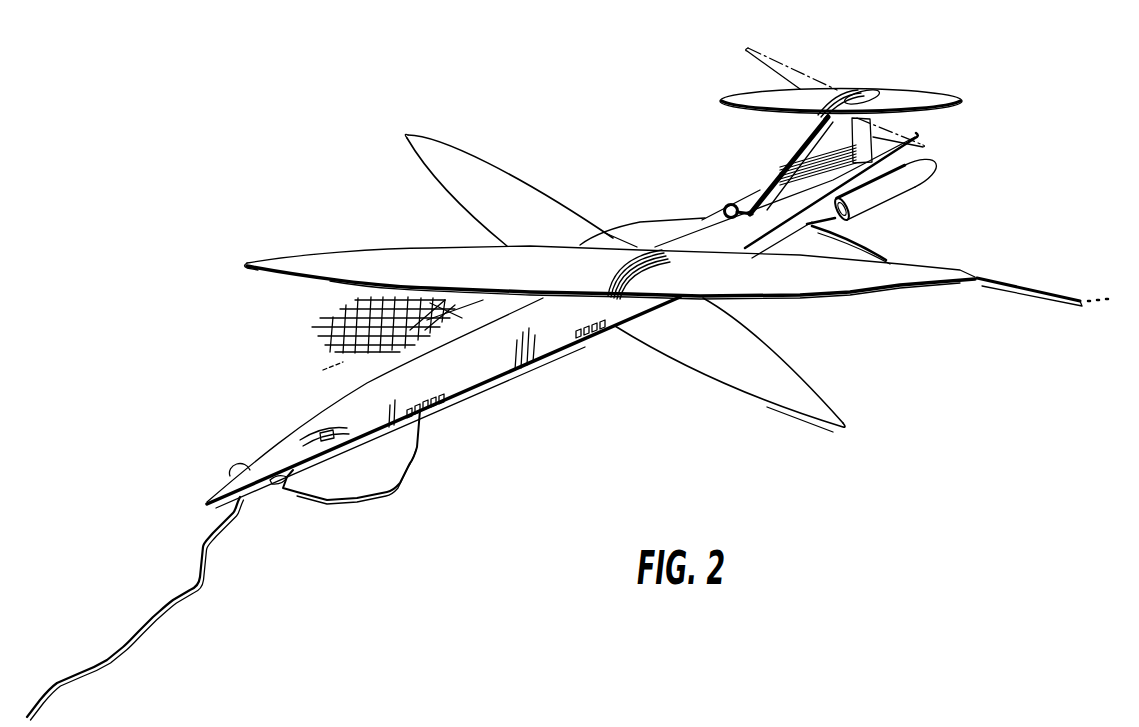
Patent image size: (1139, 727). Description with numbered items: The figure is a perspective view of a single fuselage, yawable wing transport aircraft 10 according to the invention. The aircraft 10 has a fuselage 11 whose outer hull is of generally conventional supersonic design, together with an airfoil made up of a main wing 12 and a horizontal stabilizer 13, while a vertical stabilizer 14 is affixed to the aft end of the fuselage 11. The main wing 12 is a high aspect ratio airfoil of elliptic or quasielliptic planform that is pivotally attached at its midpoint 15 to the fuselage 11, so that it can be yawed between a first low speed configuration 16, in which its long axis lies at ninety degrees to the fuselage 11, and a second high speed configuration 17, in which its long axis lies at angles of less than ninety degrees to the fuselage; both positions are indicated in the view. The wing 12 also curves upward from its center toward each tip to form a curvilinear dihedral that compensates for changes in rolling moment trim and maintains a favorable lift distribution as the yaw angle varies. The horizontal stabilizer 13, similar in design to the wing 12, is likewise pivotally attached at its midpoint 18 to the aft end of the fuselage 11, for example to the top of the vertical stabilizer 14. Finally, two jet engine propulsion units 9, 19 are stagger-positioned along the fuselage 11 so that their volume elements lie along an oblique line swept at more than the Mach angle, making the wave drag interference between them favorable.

The jet engine propulsion unit 9 is at (743, 201).
The single fuselage yawable wing transport aircraft 10 is at (637, 218).
The fuselage 11 is at (487, 377).
The main wing 12 is at (773, 395).
The horizontal stabilizer 13 is at (857, 92).
The vertical stabilizer 14 is at (795, 143).
The wing midpoint 15 is at (627, 270).
The first low speed configuration 16 is at (797, 55).
The second high speed configuration 17 is at (901, 297).
The horizontal stabilizer midpoint 18 is at (887, 87).
The jet engine propulsion unit 19 is at (912, 177).